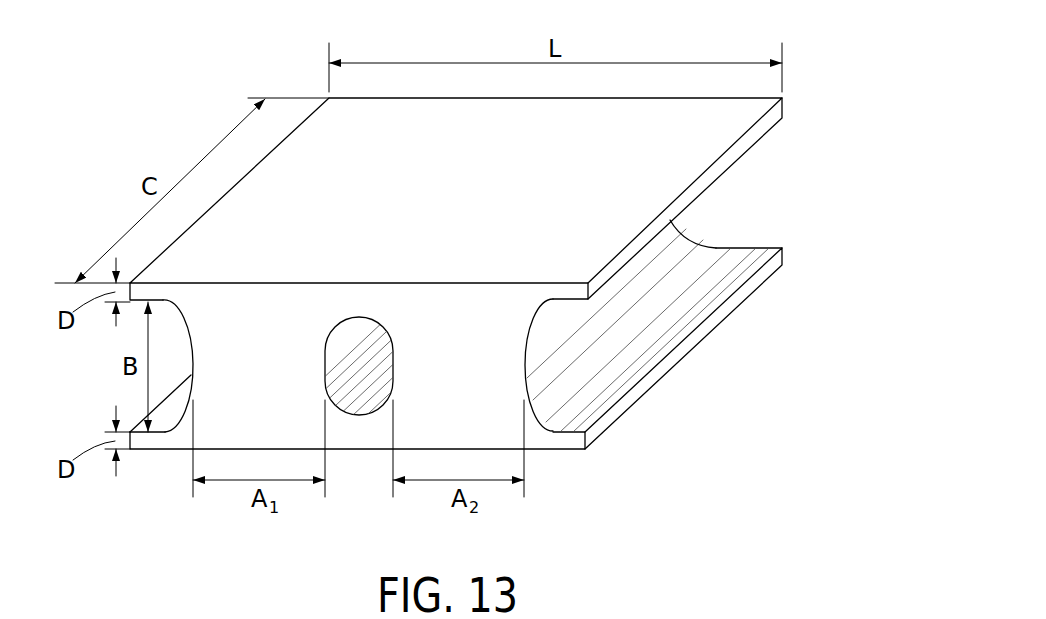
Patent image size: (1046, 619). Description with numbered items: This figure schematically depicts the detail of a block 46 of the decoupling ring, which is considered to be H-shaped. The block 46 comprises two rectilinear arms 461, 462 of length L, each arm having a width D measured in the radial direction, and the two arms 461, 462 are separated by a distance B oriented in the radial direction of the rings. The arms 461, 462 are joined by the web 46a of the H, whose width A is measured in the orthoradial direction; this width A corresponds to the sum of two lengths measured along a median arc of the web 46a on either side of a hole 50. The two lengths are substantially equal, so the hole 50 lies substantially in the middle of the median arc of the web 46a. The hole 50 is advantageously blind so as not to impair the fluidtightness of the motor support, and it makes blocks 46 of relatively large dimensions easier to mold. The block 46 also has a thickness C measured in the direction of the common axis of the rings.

The block 46 is at (499, 318).
The first rectilinear arm 461 is at (543, 292).
The second rectilinear arm 462 is at (562, 440).
The web 46a is at (457, 370).
The hole 50 is at (358, 389).